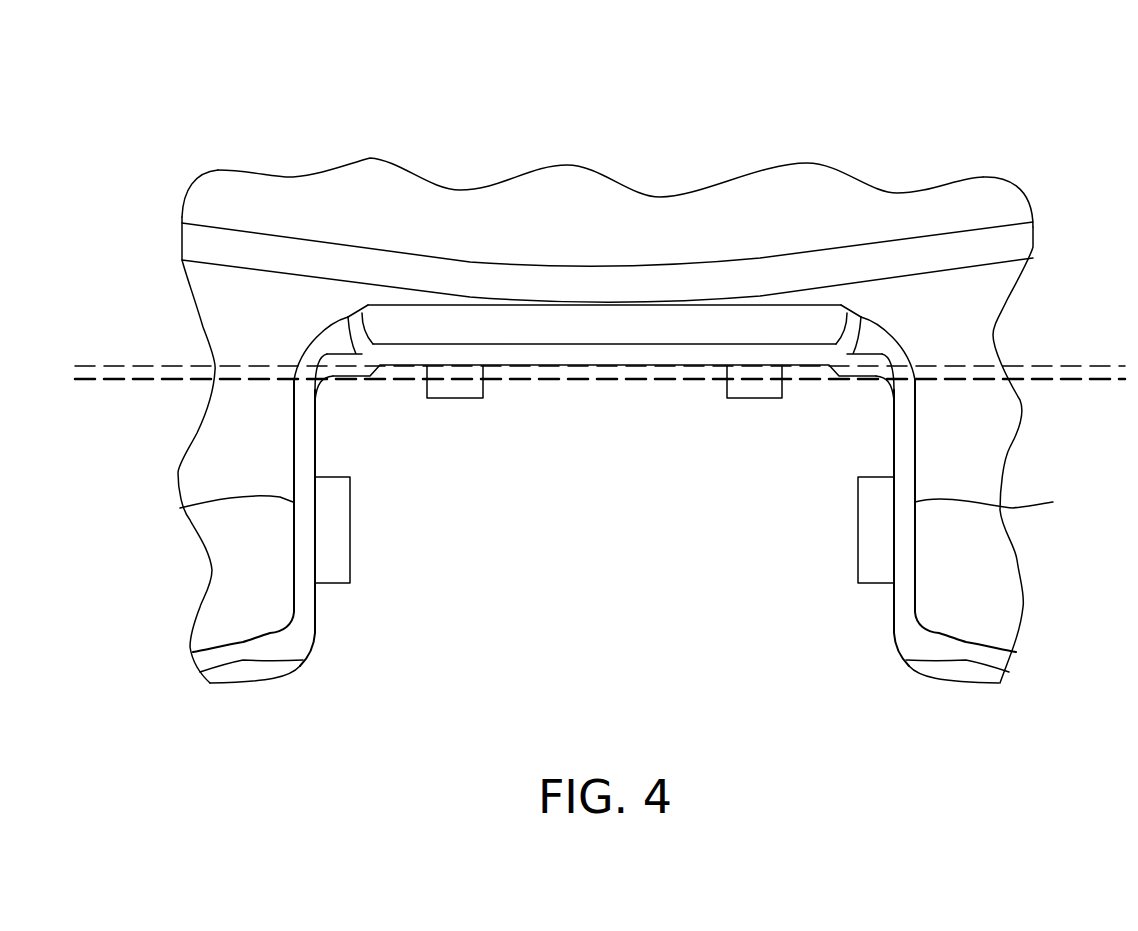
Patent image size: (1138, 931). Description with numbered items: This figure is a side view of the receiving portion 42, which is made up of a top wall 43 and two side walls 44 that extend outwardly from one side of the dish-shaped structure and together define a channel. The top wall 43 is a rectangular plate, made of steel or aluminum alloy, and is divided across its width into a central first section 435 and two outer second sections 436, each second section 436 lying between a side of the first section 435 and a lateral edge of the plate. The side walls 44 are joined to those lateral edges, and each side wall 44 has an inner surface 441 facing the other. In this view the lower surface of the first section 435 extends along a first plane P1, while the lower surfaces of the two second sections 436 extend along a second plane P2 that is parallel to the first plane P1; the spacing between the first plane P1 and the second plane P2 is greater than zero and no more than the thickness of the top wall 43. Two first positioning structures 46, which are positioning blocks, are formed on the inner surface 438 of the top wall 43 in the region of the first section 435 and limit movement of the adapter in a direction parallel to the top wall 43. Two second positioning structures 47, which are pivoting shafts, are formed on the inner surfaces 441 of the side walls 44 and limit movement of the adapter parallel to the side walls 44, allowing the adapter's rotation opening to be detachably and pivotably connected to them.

The receiving portion 42 is at (291, 351).
The top wall 43 is at (415, 328).
The first section 435 is at (772, 324).
The second section 436 is at (333, 341).
The inner surface of the top wall 438 is at (600, 367).
The side wall 44 is at (180, 508).
The inner surface of the side wall 441 is at (318, 600).
The first positioning structure 46 is at (457, 387).
The second positioning structure 47 is at (327, 528).
The first plane P1 is at (1102, 363).
The second plane P2 is at (1078, 381).